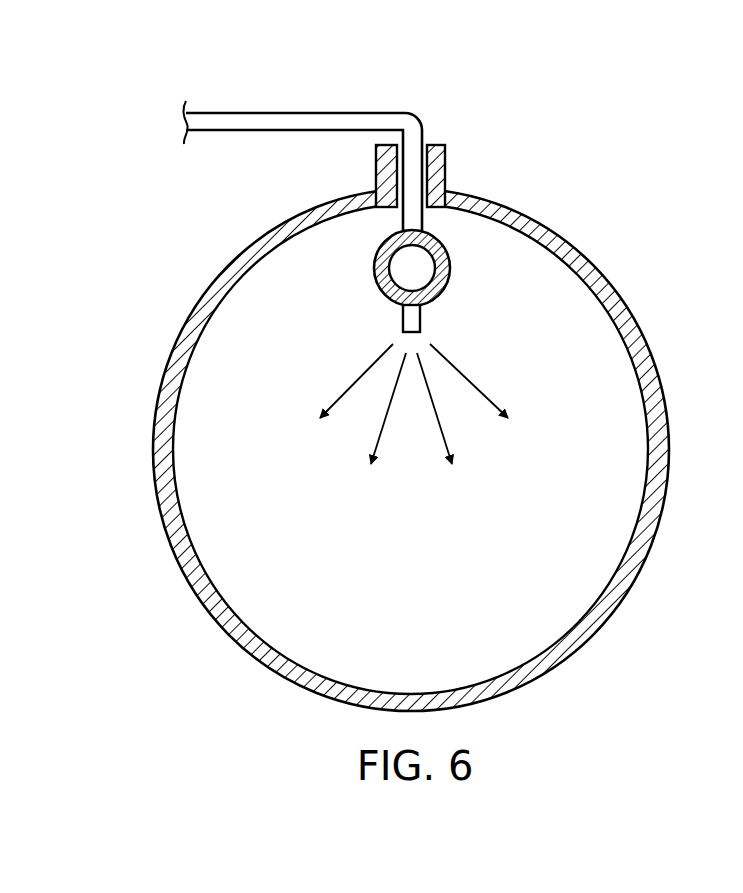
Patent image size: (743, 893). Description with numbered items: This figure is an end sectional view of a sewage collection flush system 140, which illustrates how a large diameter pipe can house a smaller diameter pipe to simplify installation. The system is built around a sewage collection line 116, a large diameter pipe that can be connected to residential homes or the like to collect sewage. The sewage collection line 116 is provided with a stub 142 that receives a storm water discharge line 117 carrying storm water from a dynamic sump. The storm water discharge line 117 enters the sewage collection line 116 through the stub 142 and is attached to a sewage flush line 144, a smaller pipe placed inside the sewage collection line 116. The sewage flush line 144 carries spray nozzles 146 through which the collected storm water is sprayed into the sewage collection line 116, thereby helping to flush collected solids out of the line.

The sewage collection line 116 is at (586, 250).
The storm water discharge line 117 is at (258, 112).
The sewage collection flush system 140 is at (464, 78).
The stub 142 is at (446, 158).
The sewage flush line 144 is at (374, 280).
The spray nozzles 146 is at (422, 320).